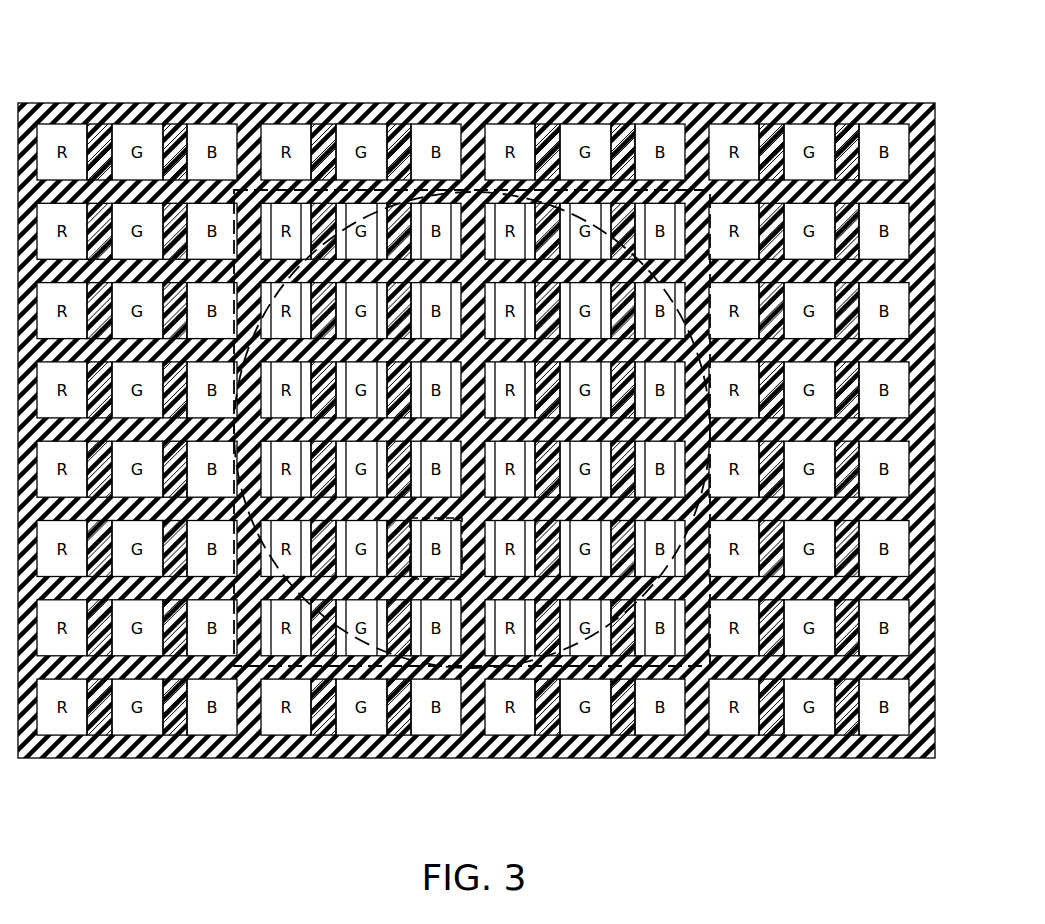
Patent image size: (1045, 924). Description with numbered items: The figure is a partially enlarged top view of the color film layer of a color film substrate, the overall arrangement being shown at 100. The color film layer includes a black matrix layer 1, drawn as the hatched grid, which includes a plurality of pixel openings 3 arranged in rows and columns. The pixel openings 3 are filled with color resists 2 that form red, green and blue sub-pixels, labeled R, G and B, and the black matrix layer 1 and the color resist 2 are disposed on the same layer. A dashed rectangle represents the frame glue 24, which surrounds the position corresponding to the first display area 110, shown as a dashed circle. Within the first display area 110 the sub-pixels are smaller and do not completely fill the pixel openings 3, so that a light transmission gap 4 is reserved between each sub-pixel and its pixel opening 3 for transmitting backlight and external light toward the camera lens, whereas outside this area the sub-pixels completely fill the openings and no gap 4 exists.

The display panel 100 is at (95, 66).
The black matrix layer 1 is at (173, 145).
The color resist 2 is at (505, 140).
The frame glue 24 is at (305, 190).
The first display area 110 is at (633, 255).
The pixel opening 3 is at (438, 579).
The light transmission gap 4 is at (643, 645).